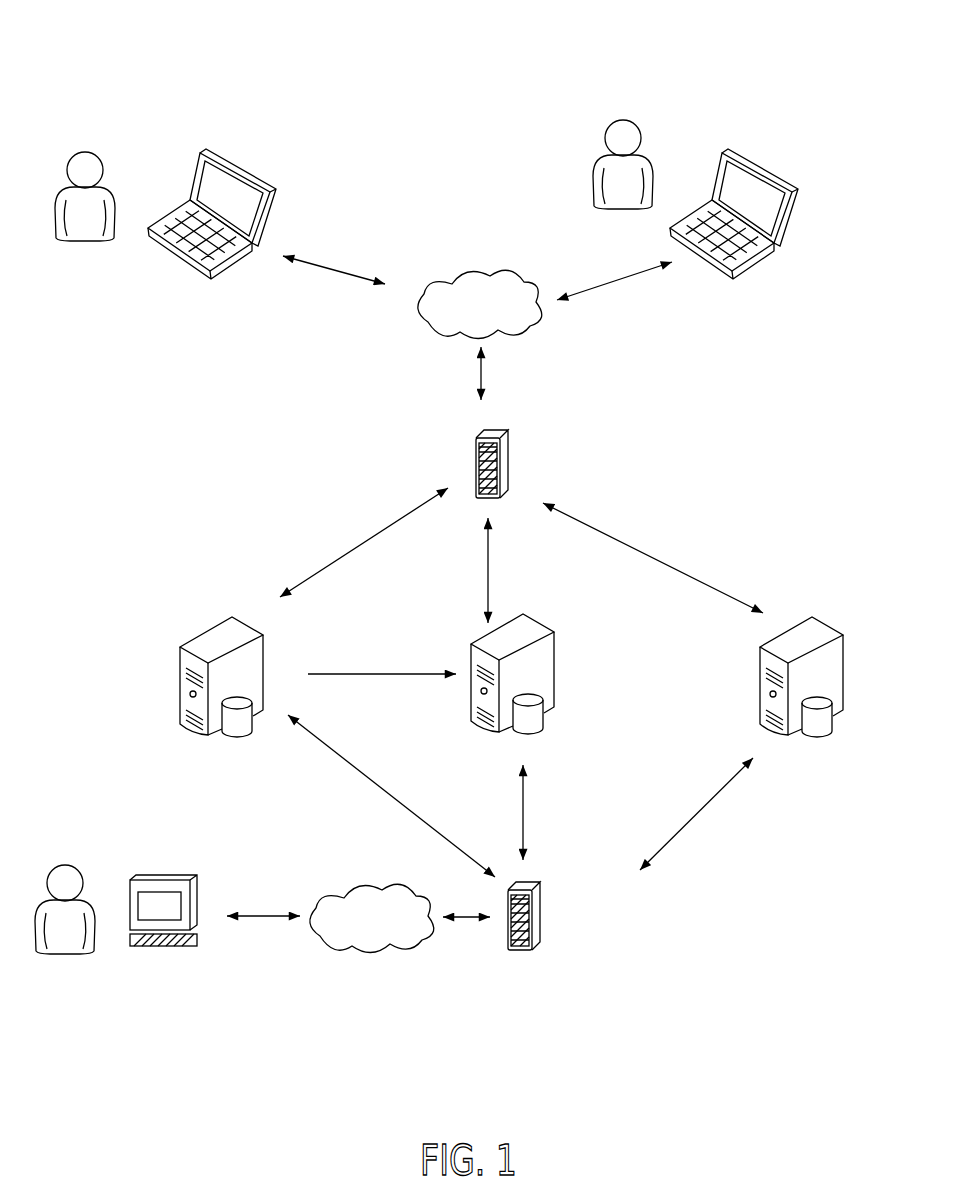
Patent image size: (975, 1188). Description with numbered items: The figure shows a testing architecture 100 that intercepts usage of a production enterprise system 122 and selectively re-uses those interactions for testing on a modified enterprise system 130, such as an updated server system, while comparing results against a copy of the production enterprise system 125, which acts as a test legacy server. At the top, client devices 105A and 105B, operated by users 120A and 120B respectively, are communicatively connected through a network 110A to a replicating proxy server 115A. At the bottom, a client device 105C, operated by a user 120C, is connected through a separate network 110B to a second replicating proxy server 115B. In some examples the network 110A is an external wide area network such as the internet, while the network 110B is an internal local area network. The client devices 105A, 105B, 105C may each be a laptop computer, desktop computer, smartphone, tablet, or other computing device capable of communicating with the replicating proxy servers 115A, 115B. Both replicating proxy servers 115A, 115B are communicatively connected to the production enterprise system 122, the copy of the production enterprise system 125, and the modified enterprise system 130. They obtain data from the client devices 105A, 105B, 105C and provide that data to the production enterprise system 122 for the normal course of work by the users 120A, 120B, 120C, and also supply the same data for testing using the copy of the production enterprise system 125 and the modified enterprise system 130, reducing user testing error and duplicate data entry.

The testing architecture 100 is at (93, 82).
The client device 105A is at (183, 270).
The client device 105B is at (718, 274).
The client device 105C is at (152, 875).
The network 110A is at (478, 268).
The network 110B is at (358, 883).
The replicating proxy server 115A is at (510, 458).
The replicating proxy server 115B is at (540, 897).
The user 120A is at (83, 241).
The user 120B is at (607, 210).
The user 120C is at (63, 954).
The production enterprise system 122 is at (210, 623).
The copy of the production enterprise system 125 is at (558, 692).
The modified enterprise system 130 is at (808, 617).